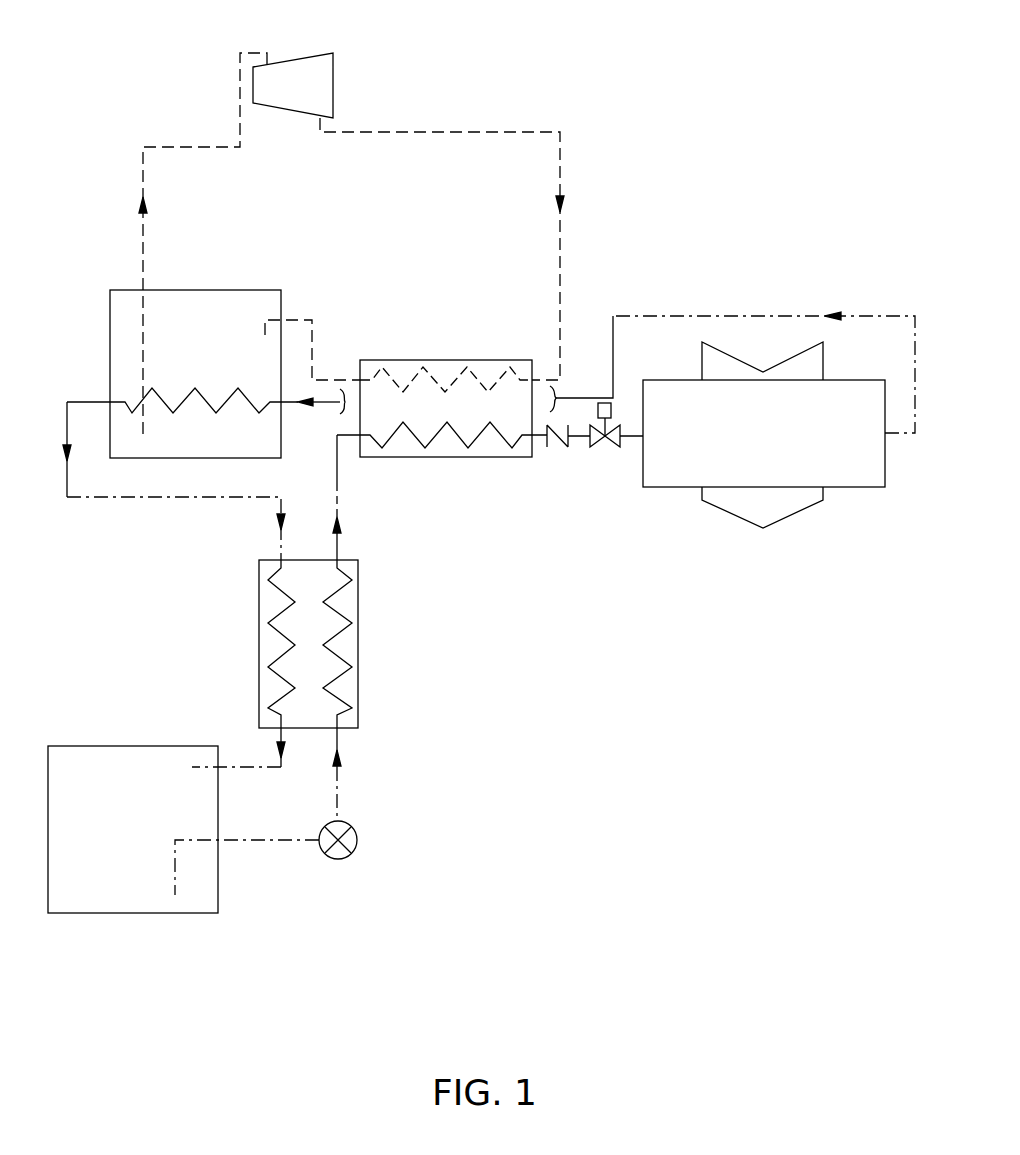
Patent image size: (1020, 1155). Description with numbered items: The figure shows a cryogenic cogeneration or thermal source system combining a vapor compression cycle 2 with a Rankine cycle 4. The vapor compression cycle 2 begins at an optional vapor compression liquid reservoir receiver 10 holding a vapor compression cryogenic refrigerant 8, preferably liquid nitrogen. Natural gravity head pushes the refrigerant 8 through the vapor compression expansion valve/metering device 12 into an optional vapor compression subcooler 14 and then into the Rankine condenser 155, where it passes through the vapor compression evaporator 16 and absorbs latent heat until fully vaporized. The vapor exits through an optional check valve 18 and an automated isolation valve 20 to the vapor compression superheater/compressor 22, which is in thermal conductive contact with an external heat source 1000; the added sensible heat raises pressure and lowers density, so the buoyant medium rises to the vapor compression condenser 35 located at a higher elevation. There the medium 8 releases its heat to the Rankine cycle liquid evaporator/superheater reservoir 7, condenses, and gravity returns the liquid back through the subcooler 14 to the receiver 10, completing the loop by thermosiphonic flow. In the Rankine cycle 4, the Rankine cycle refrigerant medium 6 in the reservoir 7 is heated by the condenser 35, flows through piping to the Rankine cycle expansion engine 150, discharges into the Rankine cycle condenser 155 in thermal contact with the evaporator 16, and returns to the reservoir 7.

The Rankine cycle expansion engine 150 is at (340, 52).
The Rankine cycle 4 is at (562, 272).
The Rankine cycle liquid evaporator/superheater reservoir 7 is at (192, 290).
The vapor compression condenser 35 is at (140, 404).
The Rankine cycle refrigerant medium 6 is at (173, 447).
The Rankine cycle condenser 155 is at (436, 378).
The vapor compression evaporator 16 is at (500, 437).
The vapor compression cycle 2 is at (338, 510).
The check valve 18 is at (551, 438).
The automated isolation valve 20 is at (609, 441).
The external heat source 1000 is at (733, 356).
The vapor compression superheater/compressor 22 is at (857, 487).
The vapor compression subcooler 14 is at (360, 643).
The vapor compression expansion valve/metering device 12 is at (357, 840).
The vapor compression cryogenic refrigerant 8 is at (73, 900).
The vapor compression liquid reservoir receiver 10 is at (173, 913).